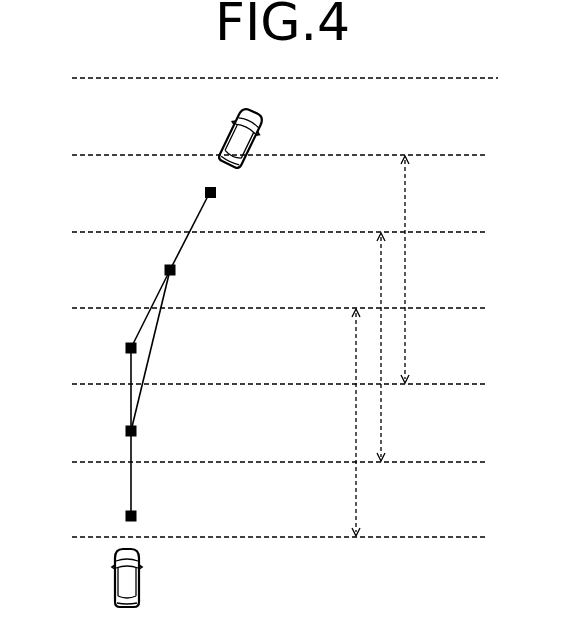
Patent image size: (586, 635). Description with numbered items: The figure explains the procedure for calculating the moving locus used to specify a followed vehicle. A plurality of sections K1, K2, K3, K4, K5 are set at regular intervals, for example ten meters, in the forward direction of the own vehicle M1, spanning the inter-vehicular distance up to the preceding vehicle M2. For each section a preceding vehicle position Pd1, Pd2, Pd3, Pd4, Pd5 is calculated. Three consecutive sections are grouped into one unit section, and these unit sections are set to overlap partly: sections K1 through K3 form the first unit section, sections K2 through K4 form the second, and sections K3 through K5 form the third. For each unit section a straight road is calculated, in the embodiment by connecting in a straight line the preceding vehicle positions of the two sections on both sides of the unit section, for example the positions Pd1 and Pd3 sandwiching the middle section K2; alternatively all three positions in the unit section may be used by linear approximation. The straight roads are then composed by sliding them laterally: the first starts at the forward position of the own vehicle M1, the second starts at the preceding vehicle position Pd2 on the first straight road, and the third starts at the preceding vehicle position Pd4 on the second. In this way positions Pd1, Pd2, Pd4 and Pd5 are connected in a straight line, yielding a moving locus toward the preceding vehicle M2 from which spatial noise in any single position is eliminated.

The preceding vehicle position Pd1 is at (125, 516).
The preceding vehicle position Pd2 is at (125, 431).
The preceding vehicle position Pd3 is at (125, 348).
The preceding vehicle position Pd4 is at (164, 270).
The preceding vehicle position Pd5 is at (204, 192).
The own vehicle M1 is at (141, 575).
The preceding vehicle M2 is at (262, 125).
The section K1 is at (280, 499).
The section K2 is at (280, 405).
The section K3 is at (280, 329).
The section K4 is at (280, 252).
The section K5 is at (280, 176).